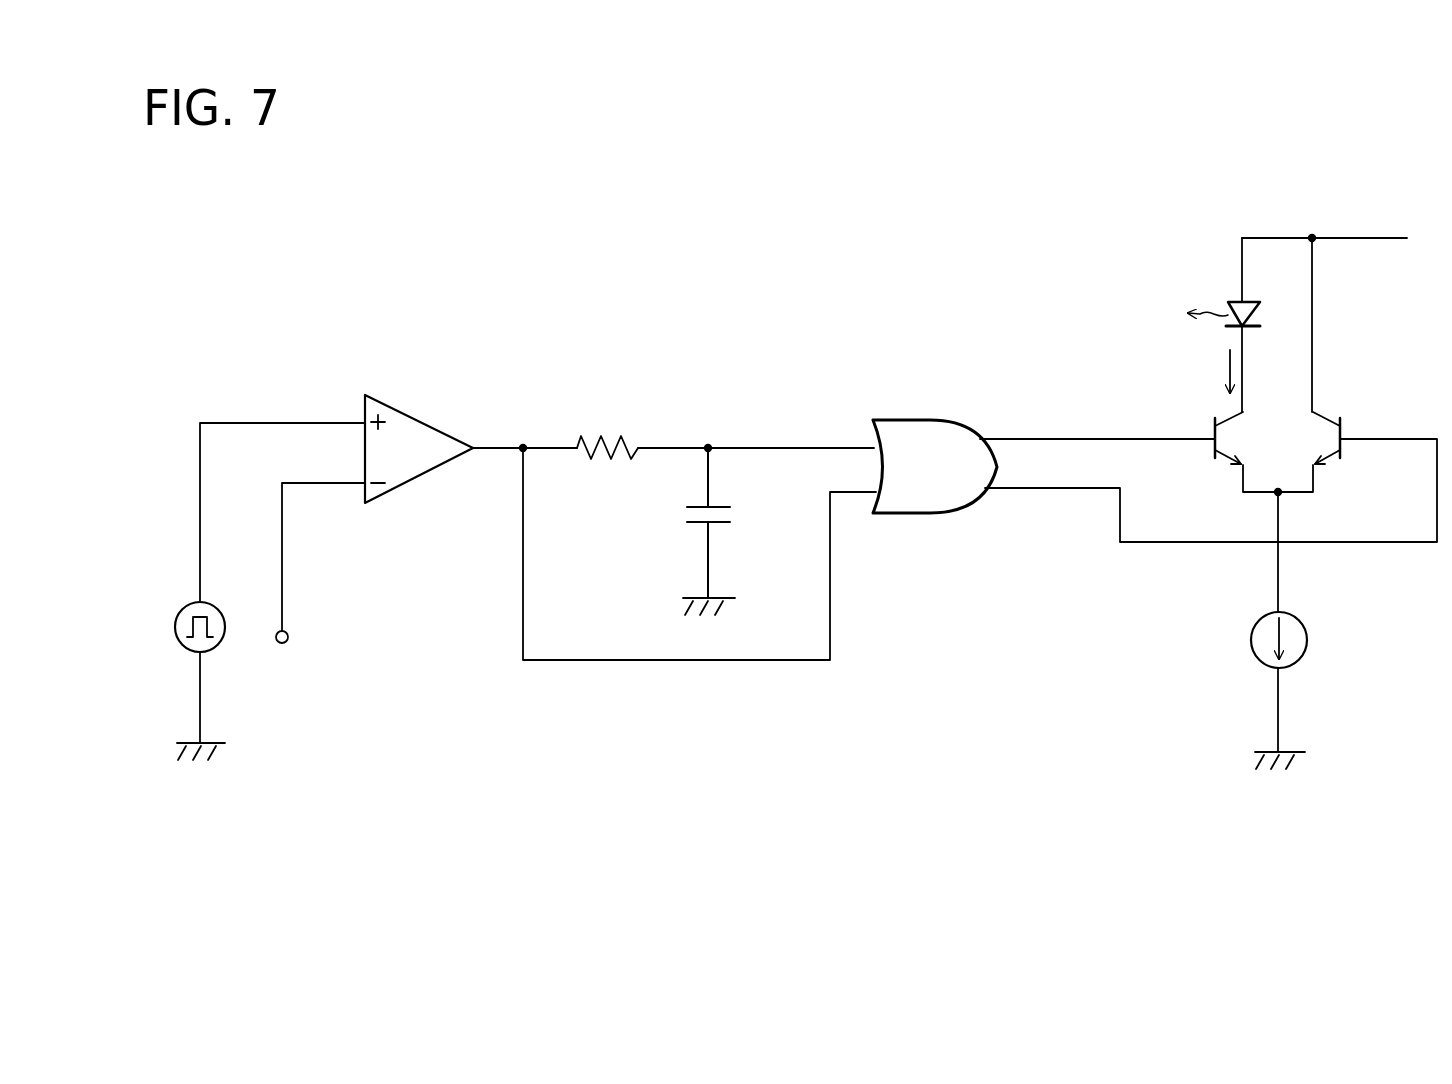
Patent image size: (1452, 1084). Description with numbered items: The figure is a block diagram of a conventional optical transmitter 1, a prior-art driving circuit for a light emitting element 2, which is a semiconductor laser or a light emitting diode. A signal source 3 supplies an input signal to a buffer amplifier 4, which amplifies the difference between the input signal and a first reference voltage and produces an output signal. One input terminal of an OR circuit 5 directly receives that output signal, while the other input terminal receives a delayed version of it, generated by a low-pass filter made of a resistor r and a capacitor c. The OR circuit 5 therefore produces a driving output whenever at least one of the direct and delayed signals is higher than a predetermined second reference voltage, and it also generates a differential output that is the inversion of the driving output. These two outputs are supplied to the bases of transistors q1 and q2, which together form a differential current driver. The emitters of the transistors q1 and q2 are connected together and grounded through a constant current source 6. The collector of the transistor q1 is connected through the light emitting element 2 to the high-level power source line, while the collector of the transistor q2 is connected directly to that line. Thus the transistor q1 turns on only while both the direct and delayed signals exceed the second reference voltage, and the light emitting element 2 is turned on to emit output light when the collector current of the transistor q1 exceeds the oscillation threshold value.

The optical transmitter 1 is at (314, 318).
The light emitting element 2 is at (1238, 302).
The signal source 3 is at (190, 607).
The buffer amplifier 4 is at (423, 413).
The OR circuit 5 is at (921, 420).
The constant current source 6 is at (1308, 640).
The resistor r is at (606, 432).
The capacitor c is at (697, 506).
The transistor q1 is at (1213, 452).
The transistor q2 is at (1342, 450).